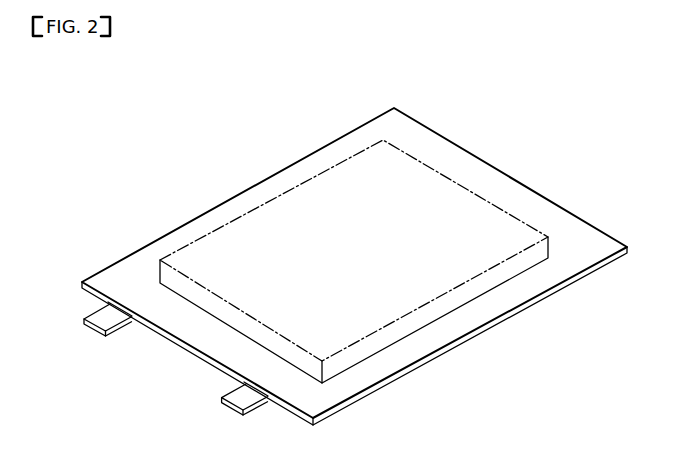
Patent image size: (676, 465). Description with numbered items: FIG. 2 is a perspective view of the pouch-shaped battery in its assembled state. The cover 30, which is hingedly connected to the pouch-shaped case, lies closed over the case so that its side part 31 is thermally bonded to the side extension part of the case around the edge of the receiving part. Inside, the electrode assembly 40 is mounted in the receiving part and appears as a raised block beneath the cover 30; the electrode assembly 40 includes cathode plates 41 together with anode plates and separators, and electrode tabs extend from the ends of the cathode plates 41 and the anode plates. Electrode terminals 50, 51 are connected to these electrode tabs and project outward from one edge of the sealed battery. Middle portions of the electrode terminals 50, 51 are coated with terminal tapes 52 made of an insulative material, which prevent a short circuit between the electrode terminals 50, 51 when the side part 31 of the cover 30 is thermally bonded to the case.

The cover 30 is at (574, 229).
The side part 31 is at (208, 218).
The electrode assembly 40 is at (352, 380).
The cathode plates 41 is at (301, 193).
The electrode terminal 50 is at (92, 328).
The electrode terminal 51 is at (229, 407).
The terminal tapes 52 is at (105, 310).